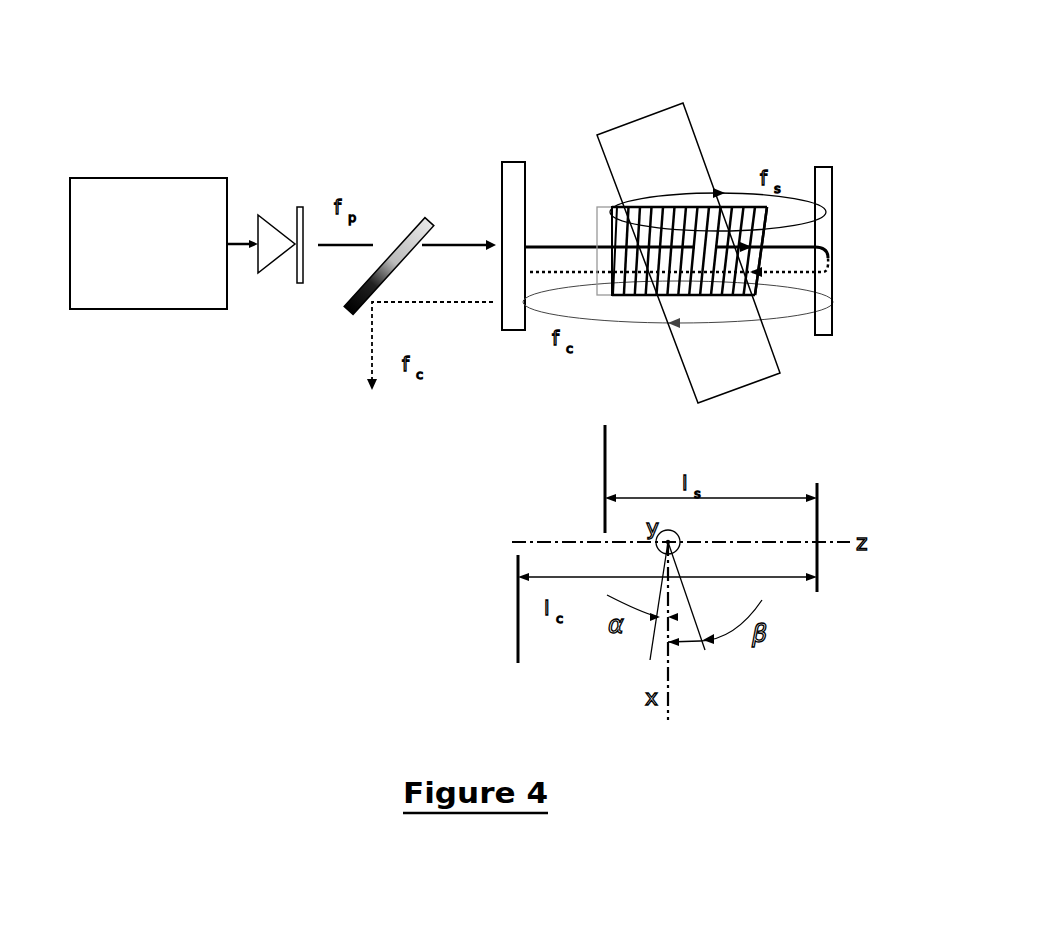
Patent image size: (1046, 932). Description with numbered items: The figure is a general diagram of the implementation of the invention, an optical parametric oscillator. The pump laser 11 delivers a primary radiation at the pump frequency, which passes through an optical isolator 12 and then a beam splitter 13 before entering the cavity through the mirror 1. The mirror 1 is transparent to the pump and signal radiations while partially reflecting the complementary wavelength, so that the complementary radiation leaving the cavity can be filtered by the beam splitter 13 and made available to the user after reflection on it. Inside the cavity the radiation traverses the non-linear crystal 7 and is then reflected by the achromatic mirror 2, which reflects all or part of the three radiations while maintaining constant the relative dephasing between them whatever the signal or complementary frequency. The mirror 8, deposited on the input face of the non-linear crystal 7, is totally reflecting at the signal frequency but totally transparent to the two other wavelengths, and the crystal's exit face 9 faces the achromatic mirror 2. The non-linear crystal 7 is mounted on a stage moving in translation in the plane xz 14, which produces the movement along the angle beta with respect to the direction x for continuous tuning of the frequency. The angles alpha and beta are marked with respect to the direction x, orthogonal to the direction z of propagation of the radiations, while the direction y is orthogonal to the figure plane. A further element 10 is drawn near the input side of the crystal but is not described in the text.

The mirror 1 is at (510, 330).
The achromatic mirror 2 is at (822, 167).
The non-linear crystal 7 is at (647, 163).
The mirror 8 is at (612, 207).
The exit face 9 is at (783, 222).
The crystal end section 10 is at (607, 207).
The pump laser 11 is at (176, 178).
The optical isolator 12 is at (280, 230).
The beam splitter 13 is at (411, 222).
The stage moving in translation in the plane xz 14 is at (640, 119).